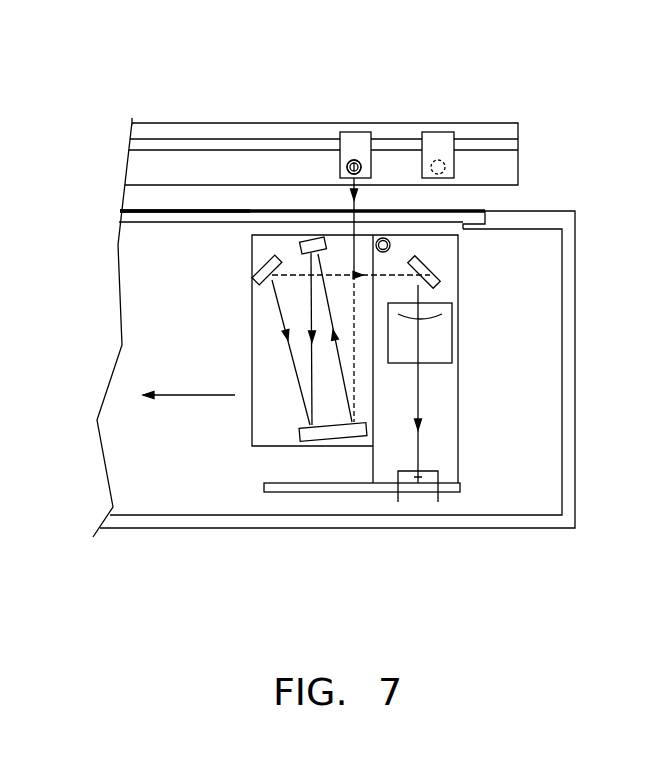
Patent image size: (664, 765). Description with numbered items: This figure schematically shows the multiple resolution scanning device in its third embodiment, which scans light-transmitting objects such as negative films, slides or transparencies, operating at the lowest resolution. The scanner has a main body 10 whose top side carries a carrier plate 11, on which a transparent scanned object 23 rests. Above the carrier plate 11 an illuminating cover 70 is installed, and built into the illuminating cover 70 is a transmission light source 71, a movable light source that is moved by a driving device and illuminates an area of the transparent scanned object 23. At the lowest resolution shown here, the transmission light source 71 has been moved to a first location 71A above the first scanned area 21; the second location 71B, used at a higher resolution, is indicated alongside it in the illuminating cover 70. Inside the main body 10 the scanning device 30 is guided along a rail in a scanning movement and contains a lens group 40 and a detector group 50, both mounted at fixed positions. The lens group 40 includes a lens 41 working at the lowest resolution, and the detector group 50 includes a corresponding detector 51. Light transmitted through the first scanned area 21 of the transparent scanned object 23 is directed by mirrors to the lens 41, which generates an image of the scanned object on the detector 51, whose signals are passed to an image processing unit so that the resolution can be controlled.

The main body 10 is at (148, 515).
The carrier plate 11 is at (162, 212).
The first scanned area 21 is at (353, 207).
The transparent scanned object 23 is at (279, 210).
The scanning device 30 is at (468, 312).
The lens group 40 is at (468, 338).
The lens 41 is at (445, 355).
The detector group 50 is at (413, 542).
The detector 51 is at (420, 480).
The illuminating cover 70 is at (224, 113).
The transmission light source 71 is at (356, 136).
The first location 71A is at (372, 160).
The second location 71B is at (452, 158).